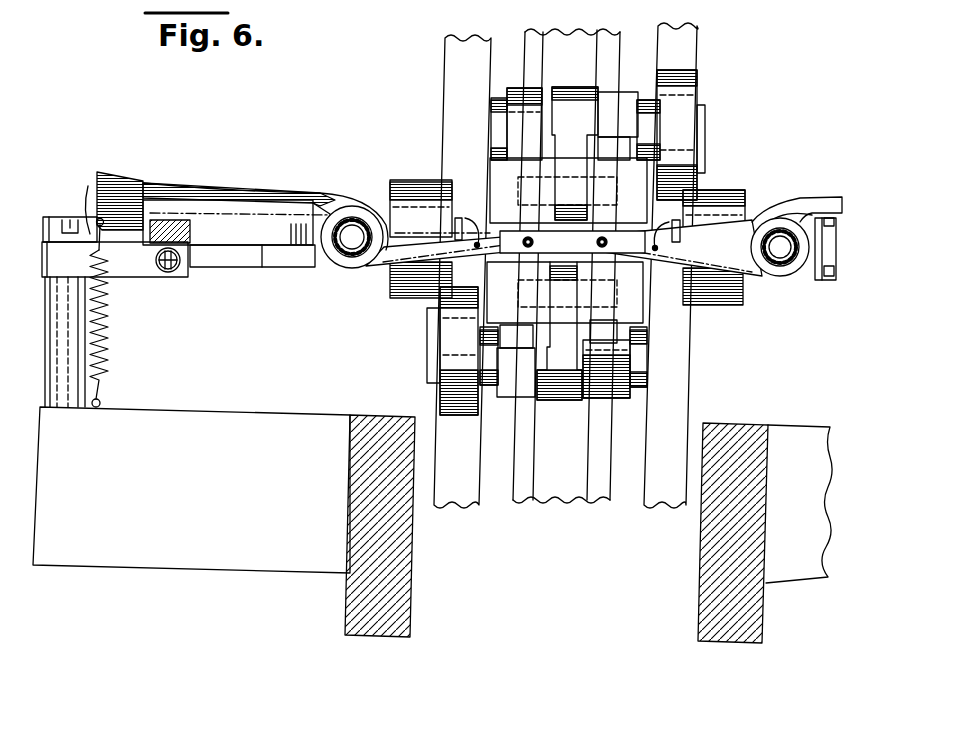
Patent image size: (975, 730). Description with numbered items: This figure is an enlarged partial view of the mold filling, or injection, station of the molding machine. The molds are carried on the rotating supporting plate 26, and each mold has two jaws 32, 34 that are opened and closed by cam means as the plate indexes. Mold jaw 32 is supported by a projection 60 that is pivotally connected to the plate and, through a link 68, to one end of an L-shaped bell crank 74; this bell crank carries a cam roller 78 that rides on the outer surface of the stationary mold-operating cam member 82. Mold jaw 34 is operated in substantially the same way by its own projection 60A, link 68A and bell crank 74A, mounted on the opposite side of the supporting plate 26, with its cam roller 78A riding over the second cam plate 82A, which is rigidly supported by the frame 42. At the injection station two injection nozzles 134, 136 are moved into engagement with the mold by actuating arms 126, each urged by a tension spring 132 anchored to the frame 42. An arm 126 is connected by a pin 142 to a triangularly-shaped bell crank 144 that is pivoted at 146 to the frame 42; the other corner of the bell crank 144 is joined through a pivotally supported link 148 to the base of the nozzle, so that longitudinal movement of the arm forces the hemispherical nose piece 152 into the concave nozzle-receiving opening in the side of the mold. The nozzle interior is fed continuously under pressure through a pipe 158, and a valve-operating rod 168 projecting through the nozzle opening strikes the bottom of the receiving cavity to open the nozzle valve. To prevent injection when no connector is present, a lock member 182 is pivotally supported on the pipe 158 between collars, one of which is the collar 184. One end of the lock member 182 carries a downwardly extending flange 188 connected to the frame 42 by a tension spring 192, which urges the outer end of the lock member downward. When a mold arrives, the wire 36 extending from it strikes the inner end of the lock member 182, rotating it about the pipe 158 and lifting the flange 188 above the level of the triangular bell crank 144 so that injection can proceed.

The supporting plate 26 is at (547, 47).
The mold jaw 32 is at (512, 262).
The mold jaw 34 is at (502, 222).
The wire 36 is at (596, 241).
The frame 42 is at (267, 575).
The projection 60 is at (597, 317).
The projection 60A is at (533, 165).
The link 68 is at (560, 377).
The link 68A is at (572, 107).
The bell crank 74 is at (515, 375).
The bell crank 74A is at (622, 100).
The cam roller 78 is at (455, 375).
The cam roller 78A is at (682, 102).
The mold-operating cam member 82 is at (463, 485).
The cam plate 82A is at (667, 482).
The actuating arm 126 is at (192, 242).
The tension spring 132 is at (182, 273).
The injection nozzle 134 is at (753, 217).
The injection nozzle 136 is at (383, 208).
The pin 142 is at (168, 218).
The bell crank 144 is at (128, 268).
The pivot 146 is at (63, 380).
The link 148 is at (255, 247).
The nose piece 152 is at (462, 223).
The pipe 158 is at (360, 253).
The valve-operating rod 168 is at (473, 232).
The lock member 182 is at (250, 183).
The collar 184 is at (335, 258).
The flange 188 is at (113, 208).
The tension spring 192 is at (106, 348).